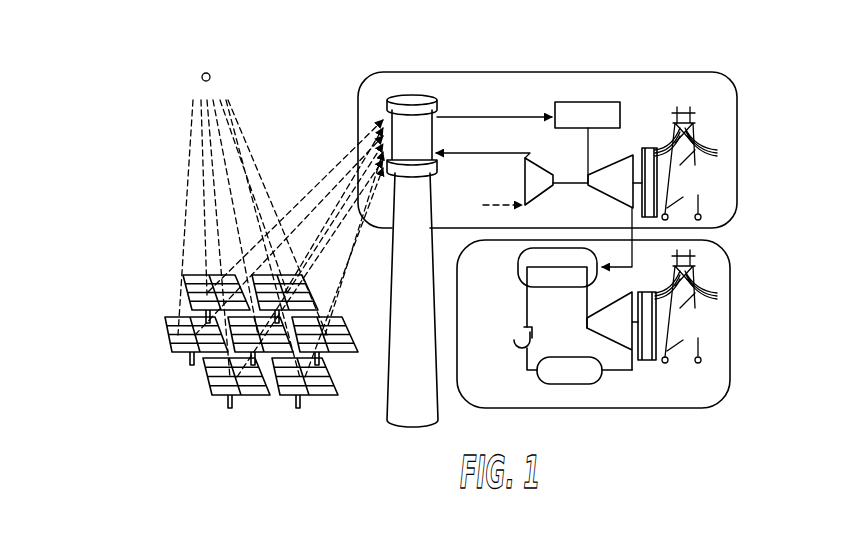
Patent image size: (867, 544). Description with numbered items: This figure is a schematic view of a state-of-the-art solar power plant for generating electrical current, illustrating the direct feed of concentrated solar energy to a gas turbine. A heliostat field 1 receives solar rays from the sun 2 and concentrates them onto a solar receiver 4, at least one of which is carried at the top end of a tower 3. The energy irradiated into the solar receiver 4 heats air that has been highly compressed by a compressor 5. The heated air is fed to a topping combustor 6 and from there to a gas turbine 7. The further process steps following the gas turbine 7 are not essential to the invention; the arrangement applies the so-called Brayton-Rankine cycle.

The heliostat field 1 is at (215, 380).
The sun 2 is at (208, 72).
The tower 3 is at (398, 398).
The solar receiver 4 is at (412, 98).
The compressor 5 is at (540, 177).
The topping combustor 6 is at (587, 108).
The gas turbine 7 is at (624, 174).